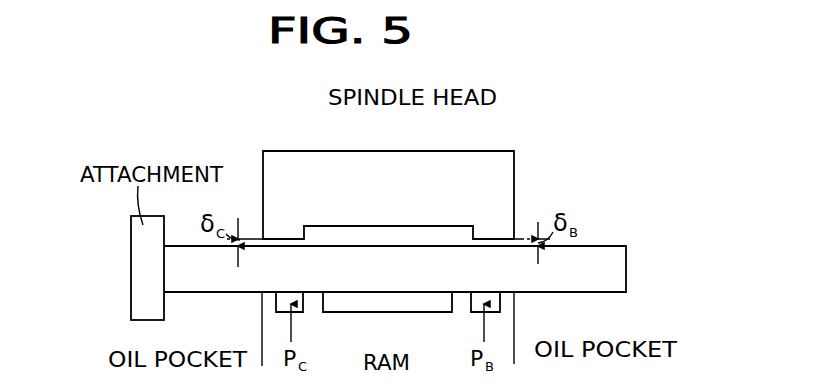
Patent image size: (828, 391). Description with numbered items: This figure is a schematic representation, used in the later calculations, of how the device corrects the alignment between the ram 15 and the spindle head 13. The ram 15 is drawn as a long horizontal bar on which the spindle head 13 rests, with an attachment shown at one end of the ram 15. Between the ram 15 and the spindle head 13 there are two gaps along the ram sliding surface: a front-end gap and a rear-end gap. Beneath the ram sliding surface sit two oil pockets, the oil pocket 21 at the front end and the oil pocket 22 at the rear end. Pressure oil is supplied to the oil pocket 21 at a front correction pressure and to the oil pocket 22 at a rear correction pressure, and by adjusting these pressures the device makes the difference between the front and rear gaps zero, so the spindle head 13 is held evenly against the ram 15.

The spindle head 13 is at (367, 165).
The ram 15 is at (385, 282).
The oil pocket 21 is at (283, 300).
The oil pocket 22 is at (487, 300).